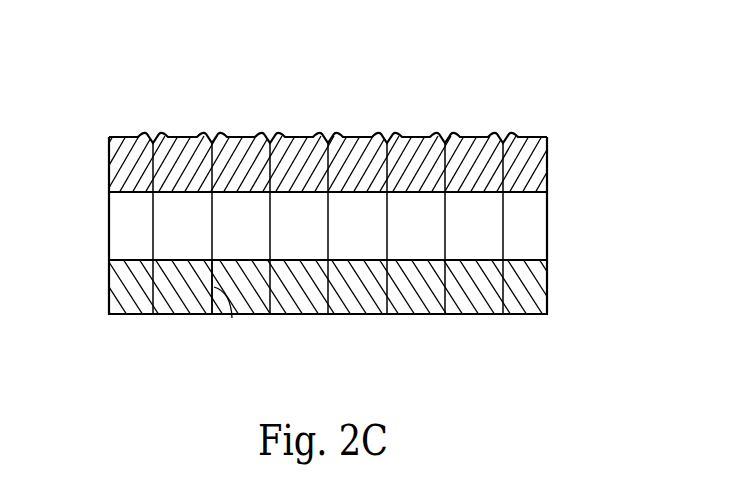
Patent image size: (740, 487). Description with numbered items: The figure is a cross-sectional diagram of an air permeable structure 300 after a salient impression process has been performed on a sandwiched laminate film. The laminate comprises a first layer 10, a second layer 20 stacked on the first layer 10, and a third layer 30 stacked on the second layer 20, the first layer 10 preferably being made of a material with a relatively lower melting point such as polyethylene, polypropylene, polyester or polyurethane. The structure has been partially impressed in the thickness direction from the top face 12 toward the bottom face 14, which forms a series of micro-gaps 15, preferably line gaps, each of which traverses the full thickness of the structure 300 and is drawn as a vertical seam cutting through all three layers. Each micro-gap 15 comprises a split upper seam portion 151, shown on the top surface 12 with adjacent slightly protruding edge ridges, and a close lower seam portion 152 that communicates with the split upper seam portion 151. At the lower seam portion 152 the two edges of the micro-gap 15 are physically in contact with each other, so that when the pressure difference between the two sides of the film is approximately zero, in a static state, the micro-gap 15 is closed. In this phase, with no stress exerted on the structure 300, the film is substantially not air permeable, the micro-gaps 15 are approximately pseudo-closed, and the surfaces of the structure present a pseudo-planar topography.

The air permeable structure 300 is at (182, 88).
The first layer 10 is at (523, 170).
The second layer 20 is at (523, 230).
The third layer 30 is at (523, 292).
The top face 12 is at (413, 125).
The bottom face 14 is at (353, 327).
The micro-gap 15 is at (207, 303).
The split upper seam portion 151 is at (213, 140).
The close lower seam portion 152 is at (232, 318).